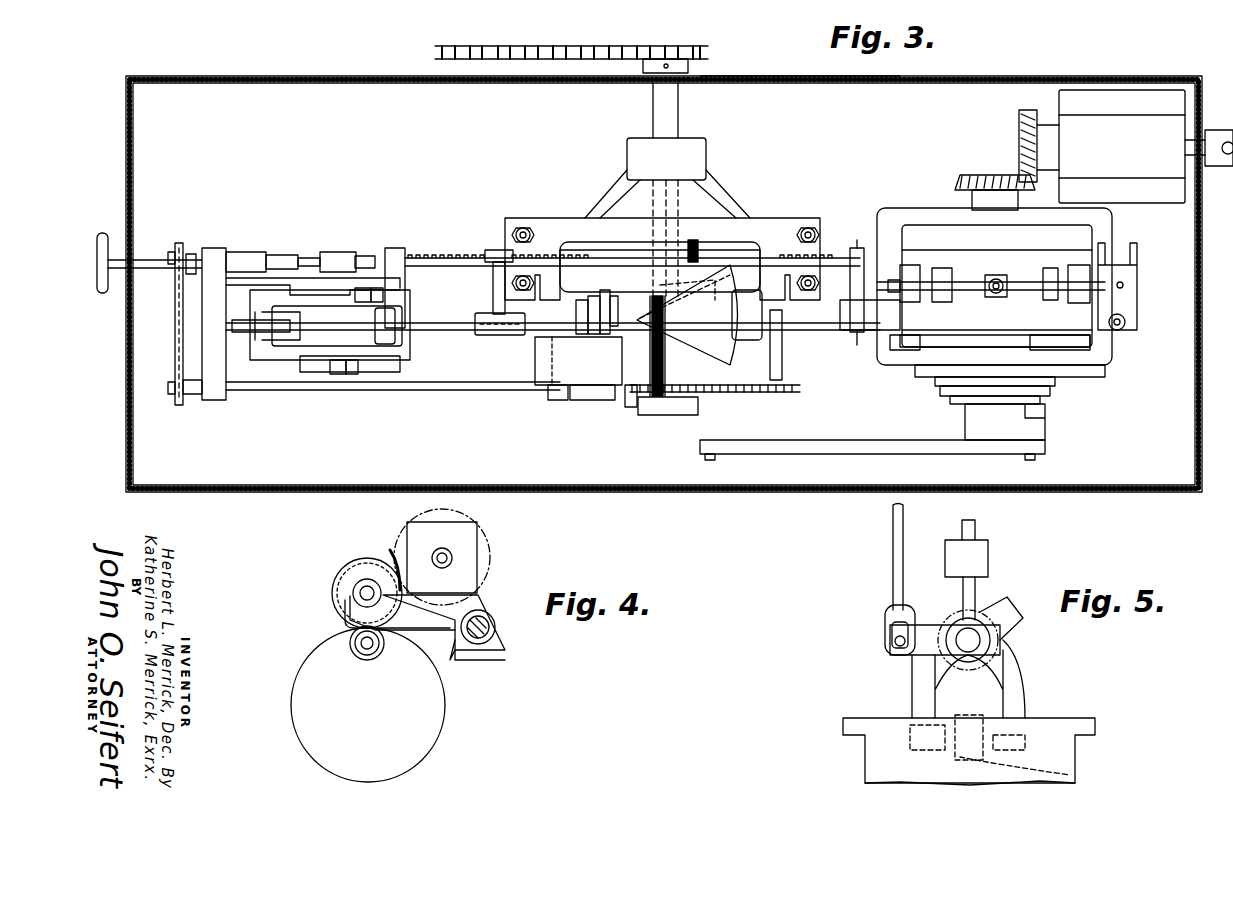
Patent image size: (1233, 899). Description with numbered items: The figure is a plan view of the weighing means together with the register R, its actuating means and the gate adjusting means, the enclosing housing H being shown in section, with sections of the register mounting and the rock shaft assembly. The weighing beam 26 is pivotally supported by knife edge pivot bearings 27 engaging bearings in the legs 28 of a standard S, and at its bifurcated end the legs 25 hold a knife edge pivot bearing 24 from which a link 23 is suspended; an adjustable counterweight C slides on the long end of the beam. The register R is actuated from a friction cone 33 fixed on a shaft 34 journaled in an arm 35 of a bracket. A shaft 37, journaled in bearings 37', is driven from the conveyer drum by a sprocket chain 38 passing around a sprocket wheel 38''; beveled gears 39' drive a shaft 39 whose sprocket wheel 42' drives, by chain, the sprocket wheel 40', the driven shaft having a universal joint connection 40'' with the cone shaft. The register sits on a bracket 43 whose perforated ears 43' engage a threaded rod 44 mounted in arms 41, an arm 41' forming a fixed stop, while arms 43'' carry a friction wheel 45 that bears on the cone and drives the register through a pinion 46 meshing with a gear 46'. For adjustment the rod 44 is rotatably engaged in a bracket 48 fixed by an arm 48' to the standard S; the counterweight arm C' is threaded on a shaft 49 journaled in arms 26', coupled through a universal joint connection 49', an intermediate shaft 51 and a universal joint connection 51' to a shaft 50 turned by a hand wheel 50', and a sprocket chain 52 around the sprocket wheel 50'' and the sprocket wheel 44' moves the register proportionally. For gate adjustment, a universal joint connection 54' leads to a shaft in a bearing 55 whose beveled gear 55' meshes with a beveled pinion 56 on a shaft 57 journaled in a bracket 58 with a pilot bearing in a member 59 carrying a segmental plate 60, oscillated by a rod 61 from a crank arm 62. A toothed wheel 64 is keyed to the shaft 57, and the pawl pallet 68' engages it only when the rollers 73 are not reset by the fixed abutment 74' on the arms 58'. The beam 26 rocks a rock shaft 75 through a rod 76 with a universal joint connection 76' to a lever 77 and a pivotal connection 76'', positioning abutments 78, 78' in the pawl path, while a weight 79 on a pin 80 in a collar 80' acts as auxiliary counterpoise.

In FIG. 3, the link 23 is at (245, 330).
In FIG. 3, the knife edge pivot bearing 24 is at (250, 337).
In FIG. 3, the legs 25 is at (318, 303).
In FIG. 3, the weighing beam 26 is at (553, 346).
In FIG. 3, the arms 26' is at (631, 251).
In FIG. 3, the knife edge pivot bearings 27 is at (378, 250).
In FIG. 3, the legs 28 is at (392, 248).
In FIG. 3, the friction cone 33 is at (687, 315).
In FIG. 4, the friction cone 33 is at (432, 723).
In FIG. 4, the shaft 34 is at (358, 660).
In FIG. 3, the arm 35 is at (747, 315).
In FIG. 3, the shaft 37 is at (695, 110).
In FIG. 3, the bearings 37' is at (692, 275).
In FIG. 3, the sprocket chain 38 is at (571, 34).
In FIG. 3, the sprocket wheel 38'' is at (702, 59).
In FIG. 3, the shaft 39 is at (662, 250).
In FIG. 3, the beveled gears 39' is at (666, 240).
In FIG. 3, the sprocket wheel 40' is at (863, 301).
In FIG. 3, the universal joint connection 40'' is at (803, 345).
In FIG. 3, the arms 41 is at (690, 399).
In FIG. 3, the fixed stop 41' is at (592, 414).
In FIG. 4, the fixed stop 41' is at (502, 651).
In FIG. 3, the sprocket wheel 42' is at (854, 252).
In FIG. 4, the bracket 43 is at (438, 598).
In FIG. 3, the perforated ears 43' is at (623, 423).
In FIG. 4, the perforated ears 43' is at (456, 623).
In FIG. 3, the arms 43'' is at (608, 284).
In FIG. 4, the arms 43'' is at (371, 615).
In FIG. 3, the rod 44 is at (393, 405).
In FIG. 4, the rod 44 is at (498, 627).
In FIG. 3, the sprocket wheel 44' is at (193, 407).
In FIG. 3, the friction wheel 45 is at (622, 298).
In FIG. 4, the friction wheel 45 is at (335, 595).
In FIG. 3, the pinion 46 is at (669, 346).
In FIG. 4, the pinion 46 is at (375, 552).
In FIG. 3, the gear 46' is at (668, 403).
In FIG. 4, the gear 46' is at (469, 557).
In FIG. 3, the bracket 48 is at (224, 341).
In FIG. 3, the laterally extending arm 48' is at (265, 228).
In FIG. 3, the shaft 49 is at (632, 249).
In FIG. 3, the universal joint connection 49' is at (341, 238).
In FIG. 3, the shaft 50 is at (155, 236).
In FIG. 3, the hand wheel 50' is at (107, 241).
In FIG. 3, the sprocket wheel 50'' is at (210, 239).
In FIG. 3, the intermediate shaft 51 is at (310, 237).
In FIG. 3, the universal joint connection 51' is at (278, 239).
In FIG. 3, the sprocket chain 52 is at (174, 358).
In FIG. 3, the universal joint connection 54' is at (1209, 169).
In FIG. 3, the bearing 55 is at (1122, 163).
In FIG. 3, the beveled gear 55' is at (1016, 146).
In FIG. 3, the beveled pinion 56 is at (985, 172).
In FIG. 3, the shaft 57 is at (970, 208).
In FIG. 3, the bracket 58 is at (1006, 300).
In FIG. 5, the bracket 58 is at (985, 733).
In FIG. 3, the arms 58' is at (1078, 270).
In FIG. 5, the arms 58' is at (989, 657).
In FIG. 3, the member 59 is at (1048, 402).
In FIG. 3, the segmental plate 60 is at (945, 370).
In FIG. 3, the rod 61 is at (868, 445).
In FIG. 3, the crank arm 62 is at (1040, 428).
In FIG. 3, the toothed wheel 64 is at (1048, 340).
In FIG. 3, the pallet 68' is at (995, 361).
In FIG. 3, the rollers 73 is at (950, 270).
In FIG. 5, the fixed abutment 74' is at (1036, 763).
In FIG. 3, the rock shaft 75 is at (962, 268).
In FIG. 5, the rock shaft 75 is at (958, 640).
In FIG. 5, the rod 76 is at (875, 557).
In FIG. 5, the universal joint connection 76' is at (880, 630).
In FIG. 3, the pivotal connection 76'' is at (1140, 337).
In FIG. 3, the lever 77 is at (1137, 262).
In FIG. 5, the lever 77 is at (925, 625).
In FIG. 3, the abutment 78 is at (912, 362).
In FIG. 5, the abutment 78 is at (896, 718).
In FIG. 3, the abutment 78' is at (1046, 265).
In FIG. 5, the abutment 78' is at (1027, 741).
In FIG. 3, the weight 79 is at (995, 272).
In FIG. 5, the weight 79 is at (990, 557).
In FIG. 3, the pin 80 is at (1008, 261).
In FIG. 5, the pin 80 is at (992, 570).
In FIG. 5, the collar 80' is at (958, 620).
In FIG. 3, the housing H is at (790, 75).
In FIG. 3, the counterweight C is at (500, 341).
In FIG. 3, the laterally extending arm C' is at (484, 282).
In FIG. 3, the register R is at (578, 361).
In FIG. 4, the register R is at (470, 553).
In FIG. 3, the standard S is at (320, 378).